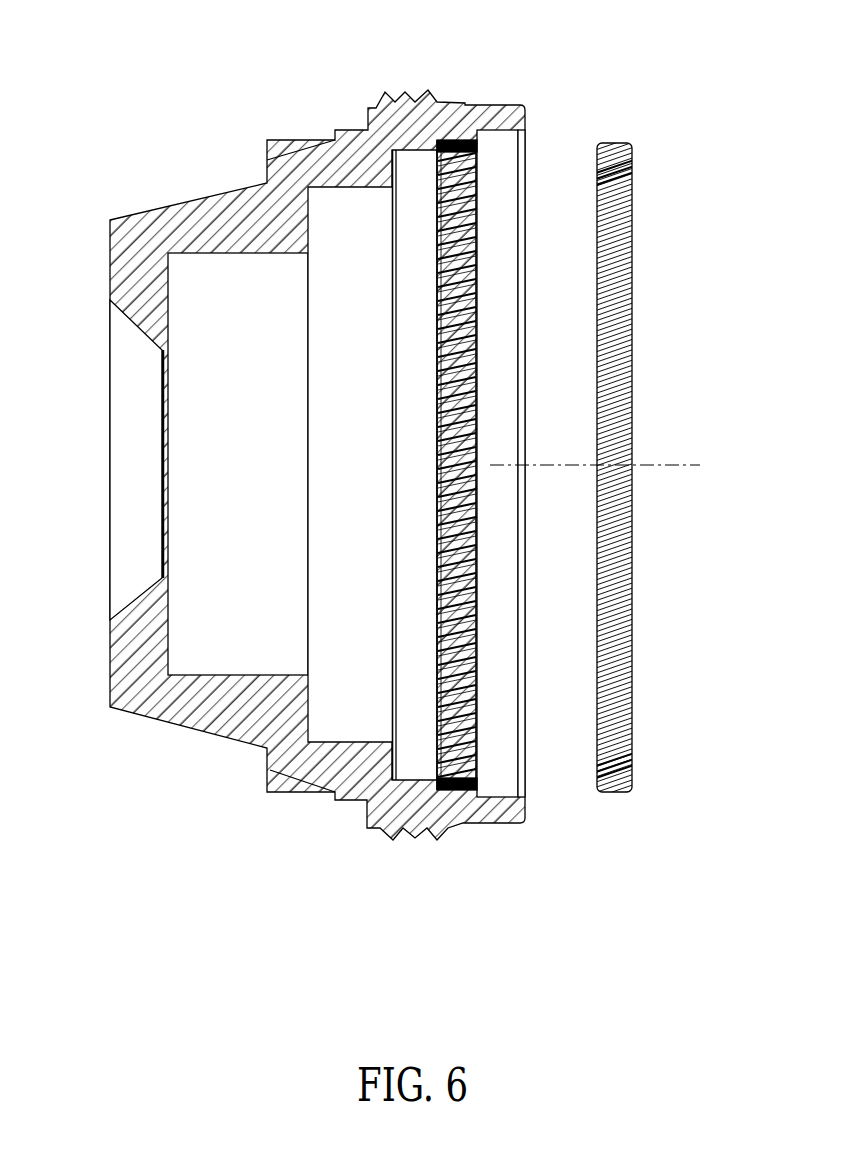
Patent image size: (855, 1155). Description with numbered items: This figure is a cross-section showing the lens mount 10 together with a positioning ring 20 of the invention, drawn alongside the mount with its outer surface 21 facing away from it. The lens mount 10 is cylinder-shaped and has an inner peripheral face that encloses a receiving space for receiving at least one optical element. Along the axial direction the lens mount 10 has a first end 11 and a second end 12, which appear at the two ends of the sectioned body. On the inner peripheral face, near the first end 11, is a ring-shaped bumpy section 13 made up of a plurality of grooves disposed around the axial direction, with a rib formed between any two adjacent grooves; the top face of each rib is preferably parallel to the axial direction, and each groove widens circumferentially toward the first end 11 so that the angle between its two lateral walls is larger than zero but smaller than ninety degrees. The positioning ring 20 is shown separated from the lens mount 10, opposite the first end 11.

The lens mount 10 is at (403, 88).
The first end 11 is at (527, 845).
The second end 12 is at (118, 726).
The bumpy section 13 is at (472, 232).
The cover 20 is at (615, 150).
The cover outer surface 21 is at (628, 405).